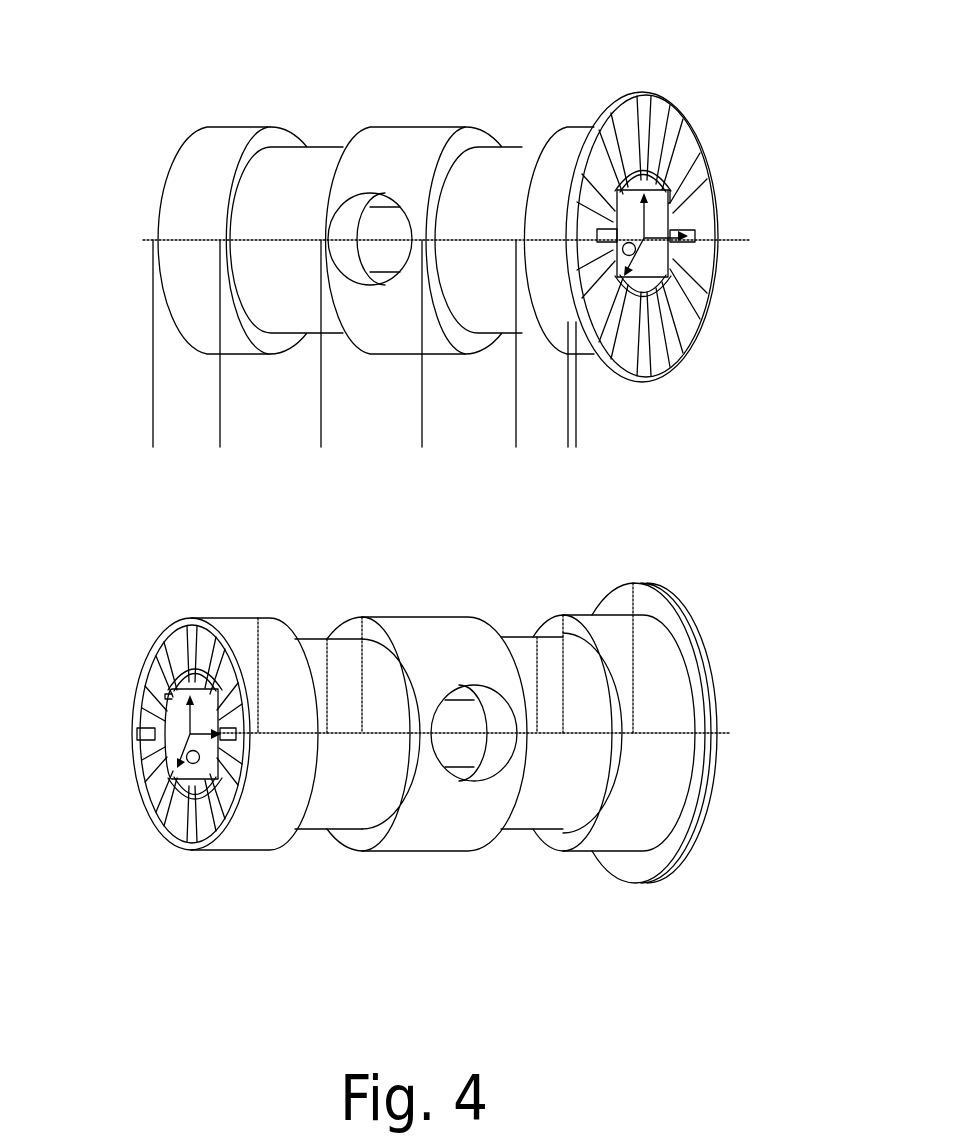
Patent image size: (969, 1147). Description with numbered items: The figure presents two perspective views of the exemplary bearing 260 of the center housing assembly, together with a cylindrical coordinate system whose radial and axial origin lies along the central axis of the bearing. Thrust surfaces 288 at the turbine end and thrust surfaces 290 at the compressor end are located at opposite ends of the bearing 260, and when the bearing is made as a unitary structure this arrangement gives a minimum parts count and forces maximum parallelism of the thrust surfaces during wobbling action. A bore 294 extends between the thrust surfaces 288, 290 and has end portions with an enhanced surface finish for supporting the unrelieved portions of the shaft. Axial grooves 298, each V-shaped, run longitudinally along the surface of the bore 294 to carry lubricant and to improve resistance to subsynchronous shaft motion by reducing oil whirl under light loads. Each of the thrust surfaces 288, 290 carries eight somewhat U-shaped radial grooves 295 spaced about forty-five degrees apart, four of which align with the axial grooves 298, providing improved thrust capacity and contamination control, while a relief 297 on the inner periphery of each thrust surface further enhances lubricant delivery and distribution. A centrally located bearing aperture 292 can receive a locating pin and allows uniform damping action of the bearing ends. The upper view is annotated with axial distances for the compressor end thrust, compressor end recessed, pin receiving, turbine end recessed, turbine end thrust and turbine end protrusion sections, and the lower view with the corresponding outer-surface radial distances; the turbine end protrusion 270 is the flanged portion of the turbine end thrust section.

The bearing 260 is at (246, 46).
The terminal end plate 270 is at (638, 93).
The thrust surfaces 288 is at (680, 116).
The thrust surfaces 290 is at (160, 643).
The bearing aperture 292 is at (373, 192).
The bore 294 is at (660, 227).
The radial grooves 295 is at (672, 173).
The relief 297 is at (687, 147).
The axial grooves 298 is at (647, 278).